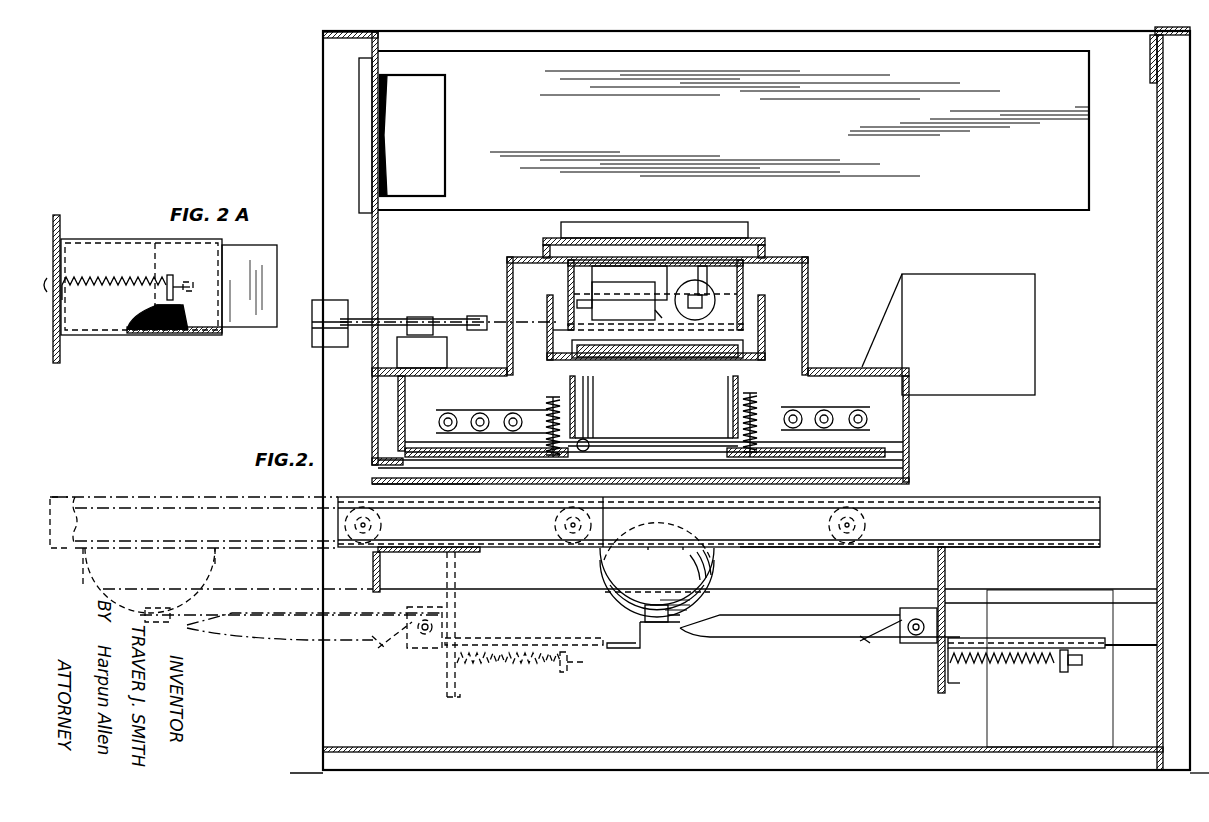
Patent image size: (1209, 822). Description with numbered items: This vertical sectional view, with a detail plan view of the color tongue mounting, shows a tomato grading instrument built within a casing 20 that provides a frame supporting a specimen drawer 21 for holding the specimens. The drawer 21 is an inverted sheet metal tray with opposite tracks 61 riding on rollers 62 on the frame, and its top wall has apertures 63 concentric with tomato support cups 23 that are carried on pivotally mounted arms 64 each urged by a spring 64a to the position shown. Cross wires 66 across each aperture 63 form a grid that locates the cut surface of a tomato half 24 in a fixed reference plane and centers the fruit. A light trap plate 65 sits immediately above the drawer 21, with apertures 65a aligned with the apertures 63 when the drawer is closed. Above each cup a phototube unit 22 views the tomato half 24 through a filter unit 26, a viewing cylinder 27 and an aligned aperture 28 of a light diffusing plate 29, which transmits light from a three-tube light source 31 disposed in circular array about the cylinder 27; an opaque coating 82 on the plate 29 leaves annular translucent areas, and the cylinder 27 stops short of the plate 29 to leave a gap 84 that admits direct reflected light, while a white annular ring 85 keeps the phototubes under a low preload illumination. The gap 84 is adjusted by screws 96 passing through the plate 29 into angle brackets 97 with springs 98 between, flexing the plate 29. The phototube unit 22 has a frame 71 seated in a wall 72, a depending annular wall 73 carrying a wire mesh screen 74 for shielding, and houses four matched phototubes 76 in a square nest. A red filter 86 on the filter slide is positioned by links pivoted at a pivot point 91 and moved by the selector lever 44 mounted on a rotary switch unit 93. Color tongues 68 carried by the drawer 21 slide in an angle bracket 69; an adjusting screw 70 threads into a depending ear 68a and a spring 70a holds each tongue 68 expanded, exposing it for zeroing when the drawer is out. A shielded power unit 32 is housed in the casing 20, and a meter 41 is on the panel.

In FIG. 2, the casing 20 is at (323, 118).
In FIG. 2, the drawer 21 is at (968, 570).
In FIG. 2A, the drawer 21 is at (61, 230).
In FIG. 2, the phototube unit 22 is at (778, 241).
In FIG. 2, the tomato support cup 23 is at (622, 600).
In FIG. 2, the tomato half 24 is at (716, 570).
In FIG. 2, the filter unit 26 is at (740, 350).
In FIG. 2, the viewing cylinder 27 is at (714, 277).
In FIG. 2, the aperture 28 is at (600, 452).
In FIG. 2, the light diffusing plate 29 is at (893, 445).
In FIG. 2, the light source 31 is at (856, 410).
In FIG. 2, the power unit 32 is at (1058, 210).
In FIG. 2, the meter 41 is at (362, 215).
In FIG. 2, the selector switch 44 is at (318, 347).
In FIG. 2, the track 61 is at (262, 497).
In FIG. 2, the roller 62 is at (385, 525).
In FIG. 2, the aperture 63 is at (788, 547).
In FIG. 2, the arm 64 is at (810, 632).
In FIG. 2, the spring 64a is at (870, 645).
In FIG. 2, the light trap plate 65 is at (893, 479).
In FIG. 2, the aperture 65a is at (480, 484).
In FIG. 2, the cross wires 66 is at (660, 547).
In FIG. 2, the color tongue 68 is at (1128, 640).
In FIG. 2A, the color tongue 68 is at (248, 322).
In FIG. 2, the depending ear 68a is at (1064, 672).
In FIG. 2A, the depending ear 68a is at (176, 273).
In FIG. 2, the angle bracket 69 is at (1010, 638).
In FIG. 2A, the angle bracket 69 is at (107, 335).
In FIG. 2, the adjusting screw 70 is at (1085, 660).
In FIG. 2A, the adjusting screw 70 is at (167, 306).
In FIG. 2, the spring 70a is at (1012, 673).
In FIG. 2A, the spring 70a is at (105, 277).
In FIG. 2, the frame 71 is at (543, 243).
In FIG. 2, the wall 72 is at (808, 282).
In FIG. 2, the annular wall 73 is at (743, 283).
In FIG. 2, the wire mesh screen 74 is at (590, 332).
In FIG. 2, the phototube 76 is at (703, 303).
In FIG. 2, the opaque coating 82 is at (505, 450).
In FIG. 2, the gap 84 is at (733, 440).
In FIG. 2, the white annular ring 85 is at (590, 452).
In FIG. 2, the red filter 86 is at (700, 360).
In FIG. 2, the pivot point 91 is at (487, 330).
In FIG. 2, the rotary switch unit 93 is at (397, 358).
In FIG. 2, the screw 96 is at (740, 458).
In FIG. 2, the angle bracket 97 is at (752, 398).
In FIG. 2, the spring 98 is at (760, 420).